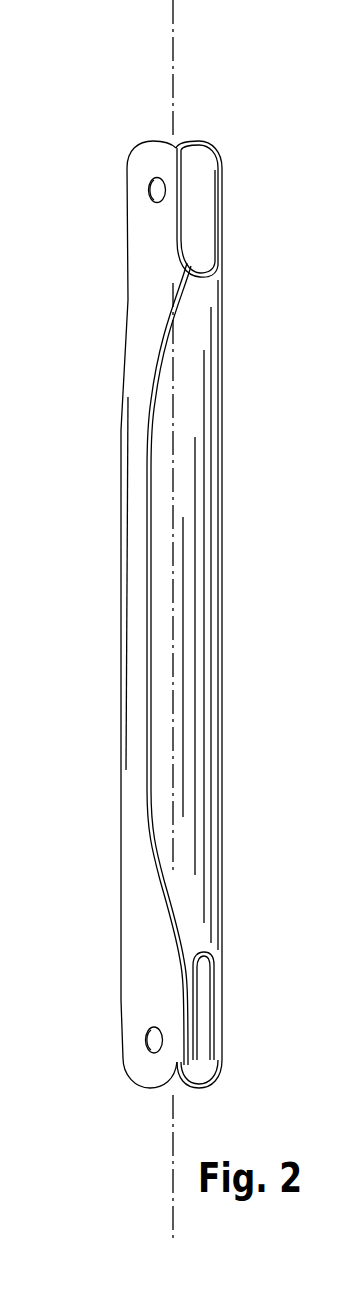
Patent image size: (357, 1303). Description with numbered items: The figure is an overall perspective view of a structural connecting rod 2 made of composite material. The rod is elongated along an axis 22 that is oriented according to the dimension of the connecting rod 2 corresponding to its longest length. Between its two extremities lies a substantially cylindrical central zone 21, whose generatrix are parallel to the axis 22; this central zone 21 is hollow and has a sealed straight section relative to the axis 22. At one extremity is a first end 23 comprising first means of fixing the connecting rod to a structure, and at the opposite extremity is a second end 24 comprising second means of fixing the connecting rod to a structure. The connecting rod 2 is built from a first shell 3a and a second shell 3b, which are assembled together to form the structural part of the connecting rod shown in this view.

The structural connecting rod 2 is at (189, 621).
The first shell 3a is at (137, 655).
The second shell 3b is at (188, 652).
The central zone 21 is at (254, 614).
The axis 22 is at (173, 13).
The first end 23 is at (93, 153).
The second end 24 is at (240, 1015).